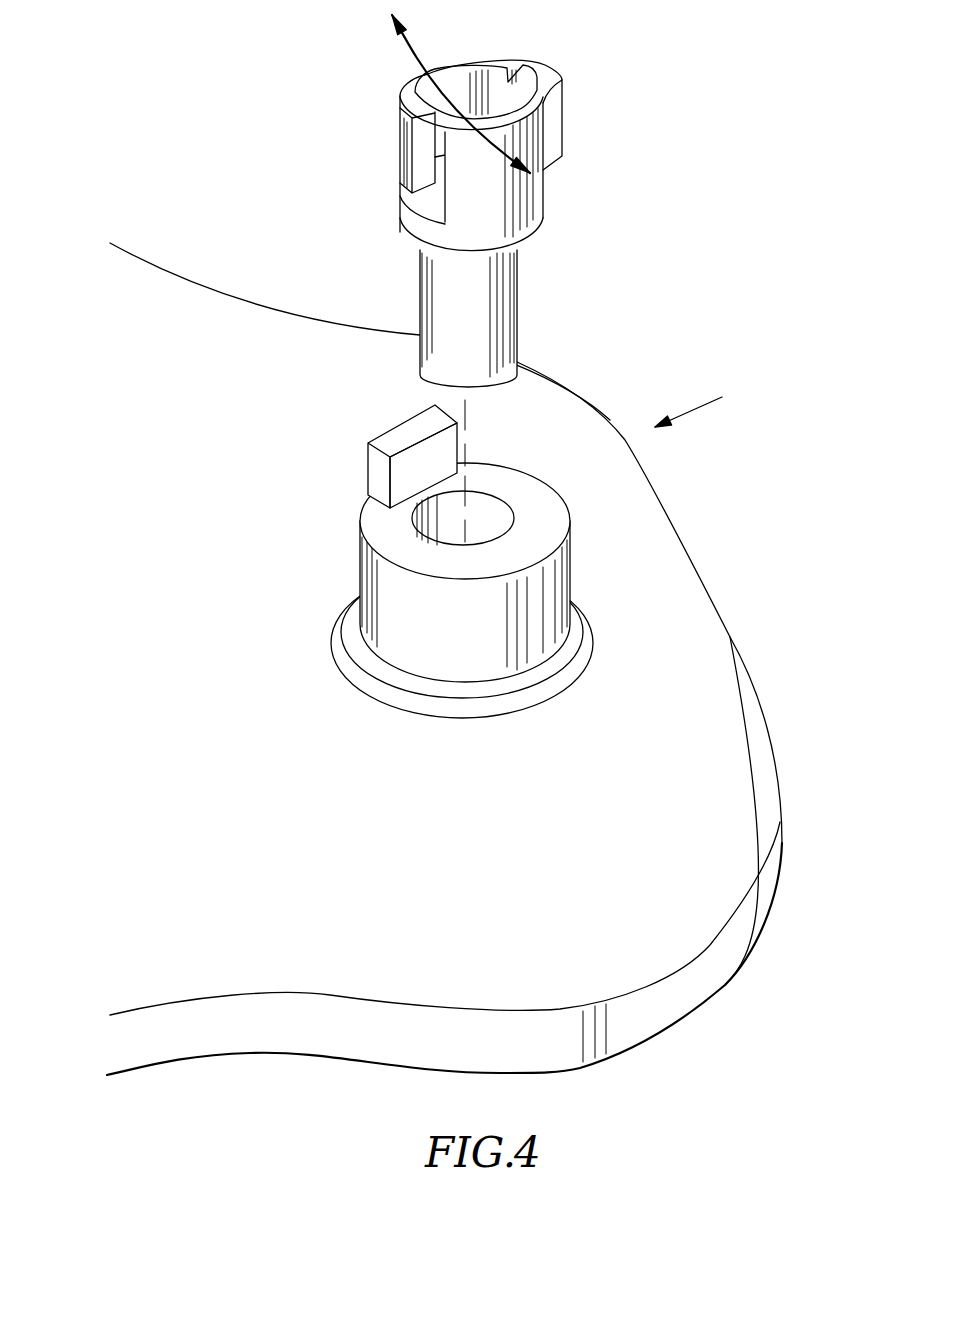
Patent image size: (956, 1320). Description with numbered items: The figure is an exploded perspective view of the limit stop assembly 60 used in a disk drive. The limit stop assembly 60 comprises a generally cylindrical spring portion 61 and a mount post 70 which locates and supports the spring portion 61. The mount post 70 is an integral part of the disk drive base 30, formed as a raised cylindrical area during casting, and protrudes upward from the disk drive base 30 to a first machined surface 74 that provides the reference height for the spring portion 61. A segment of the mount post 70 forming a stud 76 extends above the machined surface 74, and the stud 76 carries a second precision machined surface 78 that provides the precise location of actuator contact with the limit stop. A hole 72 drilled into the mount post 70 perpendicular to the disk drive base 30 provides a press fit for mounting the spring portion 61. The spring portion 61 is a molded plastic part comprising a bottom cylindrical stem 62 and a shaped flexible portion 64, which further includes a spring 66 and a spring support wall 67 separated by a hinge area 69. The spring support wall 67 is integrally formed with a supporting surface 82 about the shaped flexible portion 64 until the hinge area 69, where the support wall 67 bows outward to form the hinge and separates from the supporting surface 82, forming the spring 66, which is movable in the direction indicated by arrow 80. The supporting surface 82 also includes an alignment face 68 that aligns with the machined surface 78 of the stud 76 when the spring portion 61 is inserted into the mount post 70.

The disk drive base 30 is at (730, 637).
The limit stop assembly 60 is at (705, 401).
The spring portion 61 is at (529, 199).
The bottom cylindrical stem 62 is at (556, 233).
The shaped flexible portion 64 is at (496, 141).
The spring 66 is at (400, 102).
The spring support wall 67 is at (545, 150).
The alignment face 68 is at (398, 187).
The hinge area 69 is at (537, 63).
The mount post 70 is at (447, 555).
The hole 72 is at (422, 535).
The first machined surface 74 is at (533, 502).
The stud 76 is at (382, 427).
The second precision machined surface 78 is at (418, 463).
The arrow 80 is at (410, 50).
The supporting surface 82 is at (418, 228).